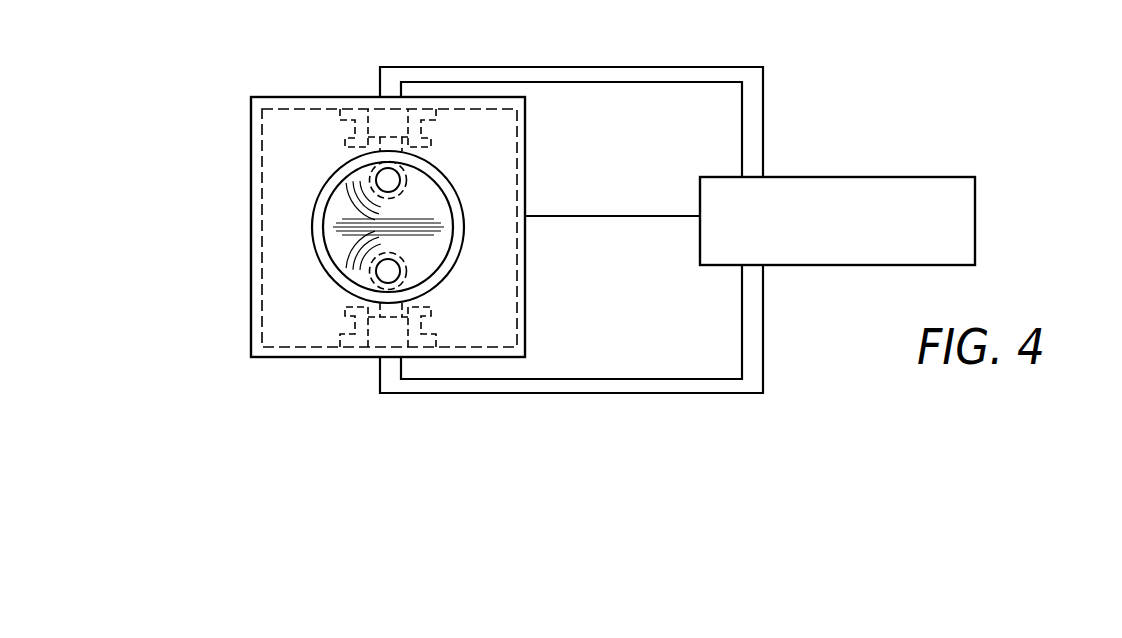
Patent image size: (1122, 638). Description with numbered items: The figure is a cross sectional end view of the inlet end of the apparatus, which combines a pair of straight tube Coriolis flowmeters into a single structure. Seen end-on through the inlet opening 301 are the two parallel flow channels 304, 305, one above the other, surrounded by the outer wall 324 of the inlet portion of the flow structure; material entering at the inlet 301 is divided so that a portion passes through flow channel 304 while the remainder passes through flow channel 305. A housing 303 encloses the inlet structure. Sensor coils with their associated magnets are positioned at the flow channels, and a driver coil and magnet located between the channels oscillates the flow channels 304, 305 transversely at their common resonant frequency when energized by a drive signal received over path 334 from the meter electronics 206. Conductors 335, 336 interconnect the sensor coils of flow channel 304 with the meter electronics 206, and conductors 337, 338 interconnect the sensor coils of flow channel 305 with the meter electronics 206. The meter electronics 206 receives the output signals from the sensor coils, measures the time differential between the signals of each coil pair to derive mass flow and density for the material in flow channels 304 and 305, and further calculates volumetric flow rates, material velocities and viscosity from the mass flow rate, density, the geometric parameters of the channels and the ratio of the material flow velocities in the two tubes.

The meter electronics 206 is at (975, 222).
The inlet 301 is at (332, 252).
The housing 303 is at (307, 98).
The flow channel 304 is at (389, 181).
The flow channel 305 is at (389, 272).
The outer wall 324 is at (312, 227).
The path 334 is at (622, 217).
The conductor 335 is at (763, 115).
The conductor 336 is at (708, 82).
The conductor 337 is at (572, 379).
The conductor 338 is at (596, 395).